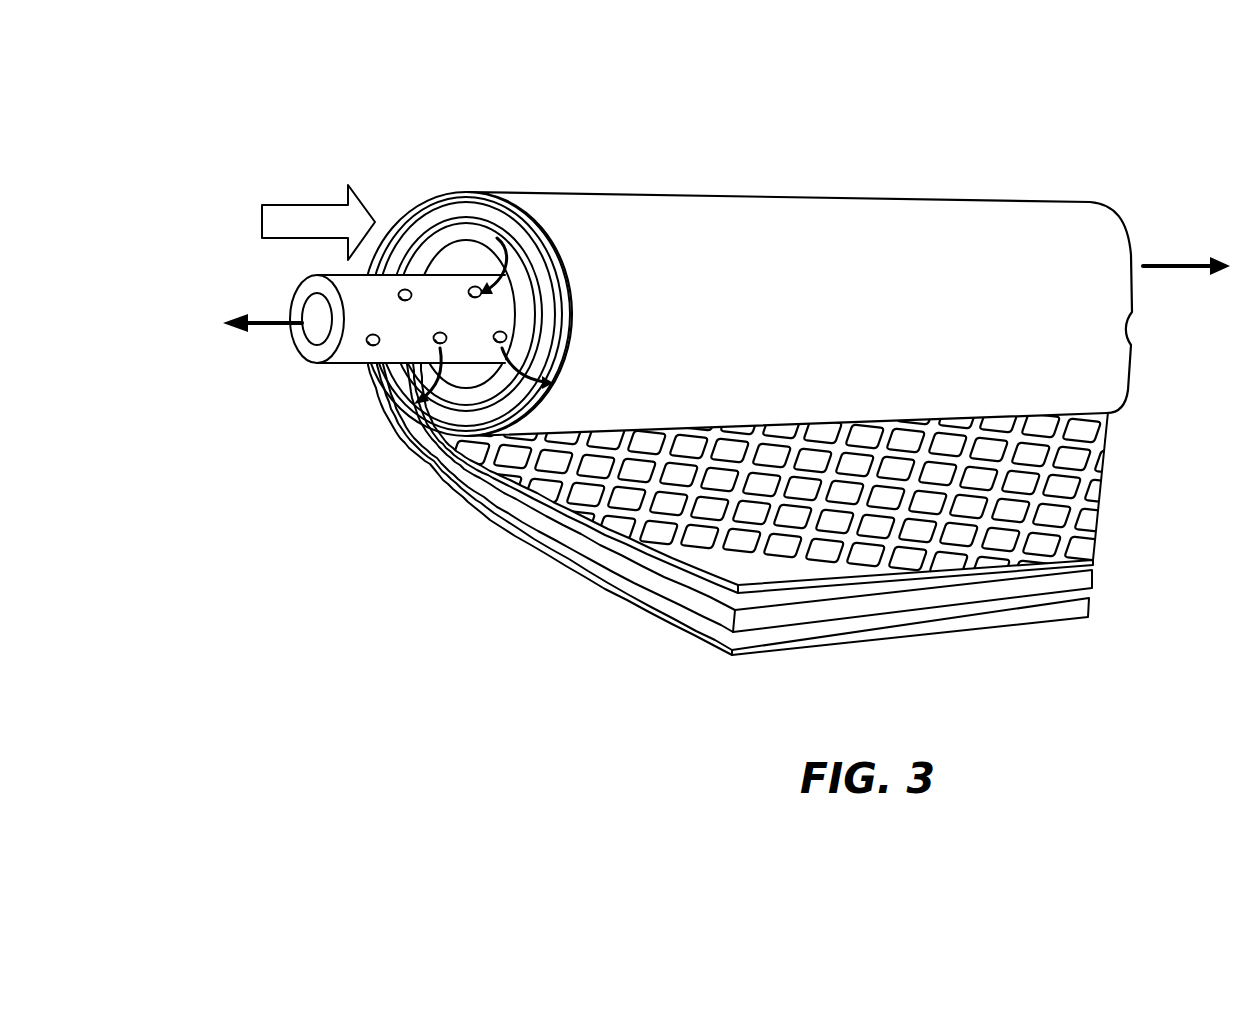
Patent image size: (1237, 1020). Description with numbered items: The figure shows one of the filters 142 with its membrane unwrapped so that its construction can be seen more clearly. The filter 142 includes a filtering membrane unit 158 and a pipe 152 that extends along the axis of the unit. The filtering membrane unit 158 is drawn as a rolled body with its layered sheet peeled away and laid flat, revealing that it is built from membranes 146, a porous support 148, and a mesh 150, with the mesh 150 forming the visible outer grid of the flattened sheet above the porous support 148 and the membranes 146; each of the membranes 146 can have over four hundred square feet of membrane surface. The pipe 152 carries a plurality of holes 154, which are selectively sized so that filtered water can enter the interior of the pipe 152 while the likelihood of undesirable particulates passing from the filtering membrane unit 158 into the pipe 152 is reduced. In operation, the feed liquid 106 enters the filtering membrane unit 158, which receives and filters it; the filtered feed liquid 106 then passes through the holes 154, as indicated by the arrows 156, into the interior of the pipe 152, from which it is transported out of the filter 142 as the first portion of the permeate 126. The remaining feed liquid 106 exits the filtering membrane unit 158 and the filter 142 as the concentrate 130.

The filter 142 is at (291, 111).
The feed liquid 106 is at (345, 190).
The concentrate 130 is at (1175, 258).
The first portion of the permeate 126 is at (267, 330).
The pipe 152 is at (319, 357).
The holes 154 is at (372, 336).
The arrows 156 is at (513, 260).
The filtering membrane unit 158 is at (791, 194).
The mesh 150 is at (562, 520).
The porous support 148 is at (603, 560).
The membranes 146 is at (692, 624).